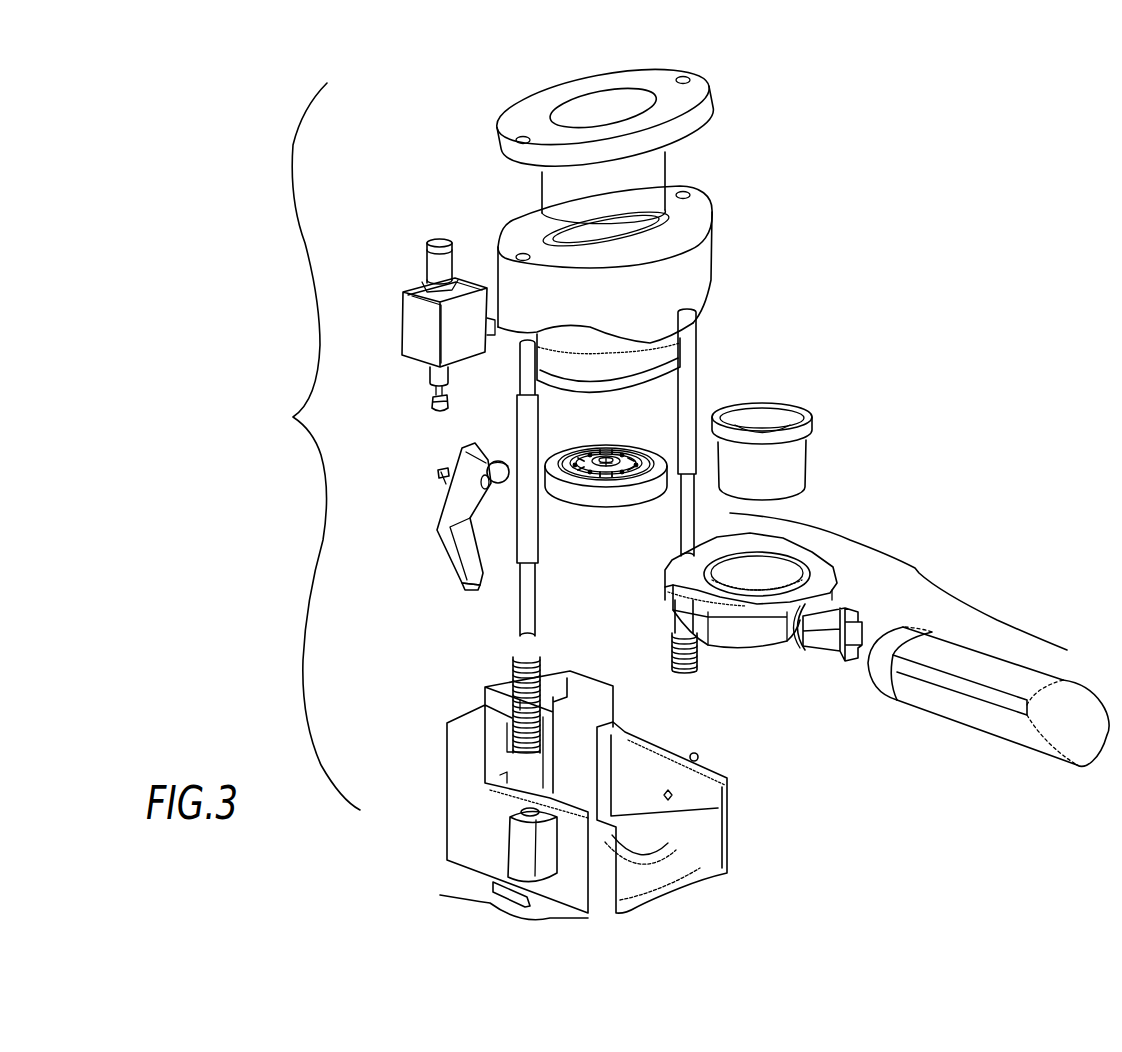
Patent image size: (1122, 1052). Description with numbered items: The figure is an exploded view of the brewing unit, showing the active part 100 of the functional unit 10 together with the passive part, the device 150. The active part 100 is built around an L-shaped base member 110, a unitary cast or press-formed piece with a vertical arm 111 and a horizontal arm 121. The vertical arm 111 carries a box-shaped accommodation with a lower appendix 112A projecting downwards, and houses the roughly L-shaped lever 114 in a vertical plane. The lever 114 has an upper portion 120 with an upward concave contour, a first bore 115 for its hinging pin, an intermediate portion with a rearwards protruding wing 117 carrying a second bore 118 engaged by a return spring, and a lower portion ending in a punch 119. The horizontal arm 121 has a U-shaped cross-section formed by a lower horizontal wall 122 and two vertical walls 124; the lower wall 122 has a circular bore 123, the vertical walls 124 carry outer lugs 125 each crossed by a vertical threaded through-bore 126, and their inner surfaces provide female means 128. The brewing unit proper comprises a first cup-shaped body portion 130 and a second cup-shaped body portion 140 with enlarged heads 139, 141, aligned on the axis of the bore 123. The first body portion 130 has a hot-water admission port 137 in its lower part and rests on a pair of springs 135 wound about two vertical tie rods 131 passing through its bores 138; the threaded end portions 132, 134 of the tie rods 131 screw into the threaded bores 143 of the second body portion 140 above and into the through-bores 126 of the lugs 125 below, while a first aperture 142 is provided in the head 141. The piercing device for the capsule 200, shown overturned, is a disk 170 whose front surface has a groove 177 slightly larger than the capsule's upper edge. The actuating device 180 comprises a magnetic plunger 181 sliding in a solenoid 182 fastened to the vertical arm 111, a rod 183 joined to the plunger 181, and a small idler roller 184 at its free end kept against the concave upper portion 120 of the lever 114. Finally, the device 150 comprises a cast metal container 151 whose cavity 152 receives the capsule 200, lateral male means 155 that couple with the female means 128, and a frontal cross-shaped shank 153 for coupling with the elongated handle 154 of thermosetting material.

The functional unit 10 is at (882, 291).
The active part 100 is at (290, 446).
The L-shaped base member 110 is at (592, 803).
The vertical arm 111 is at (532, 792).
The lower appendix 112A is at (481, 890).
The lever 114 is at (430, 529).
The first bore 115 is at (489, 466).
The rearwards protruding wing 117 is at (446, 484).
The second bore 118 is at (436, 471).
The punch 119 is at (479, 588).
The upper portion 120 is at (475, 448).
The horizontal arm 121 is at (724, 813).
The lower horizontal wall 122 is at (687, 860).
The circular bore 123 is at (640, 848).
The vertical walls 124 is at (465, 812).
The lugs 125 is at (520, 860).
The vertical threaded through-bore 126 is at (483, 788).
The female means 128 is at (703, 800).
The first cup-shaped body portion 130 is at (610, 278).
The vertical tie rods 131 is at (608, 472).
The threaded end portion 132 is at (520, 378).
The threaded end portion 134 is at (532, 608).
The springs 135 is at (512, 663).
The port 137 is at (532, 340).
The bores 138 is at (690, 188).
The enlarged head 139 is at (697, 205).
The second cup-shaped body portion 140 is at (596, 115).
The enlarged head 141 is at (600, 91).
The first aperture 142 is at (538, 117).
The threaded bores 143 is at (688, 75).
The device 150 is at (853, 647).
The metal container 151 is at (717, 622).
The cavity 152 is at (755, 580).
The cross-shaped shank 153 is at (847, 663).
The elongated handle 154 is at (965, 713).
The male means 155 is at (685, 593).
The disk 170 is at (606, 485).
The groove 177 is at (637, 442).
The actuating device 180 is at (419, 316).
The plunger 181 is at (437, 266).
The solenoid 182 is at (418, 323).
The rod 183 is at (430, 378).
The idler roller 184 is at (430, 410).
The capsule 200 is at (817, 476).